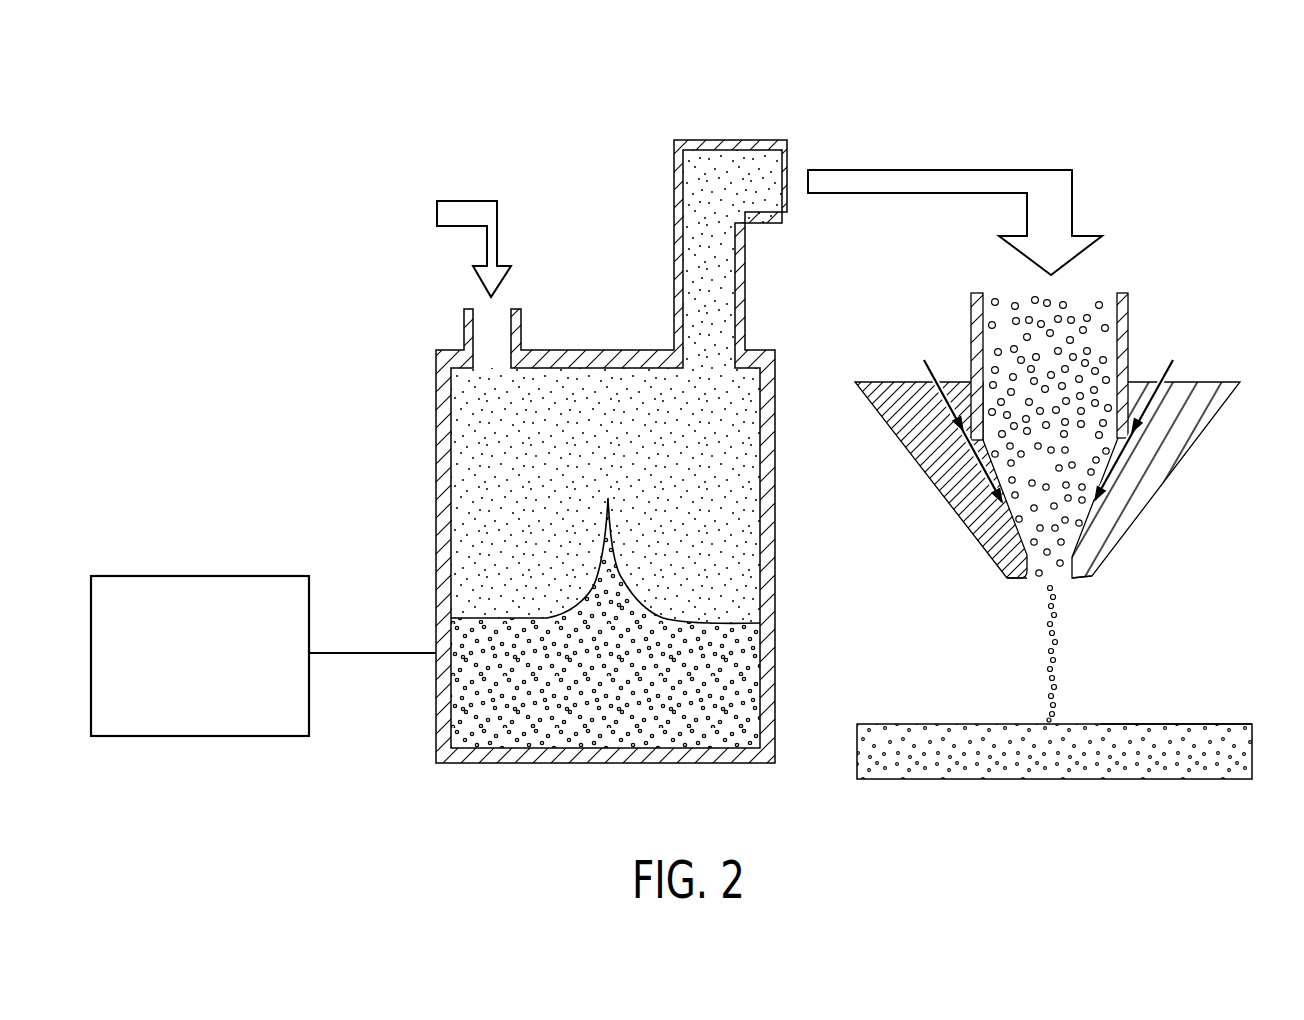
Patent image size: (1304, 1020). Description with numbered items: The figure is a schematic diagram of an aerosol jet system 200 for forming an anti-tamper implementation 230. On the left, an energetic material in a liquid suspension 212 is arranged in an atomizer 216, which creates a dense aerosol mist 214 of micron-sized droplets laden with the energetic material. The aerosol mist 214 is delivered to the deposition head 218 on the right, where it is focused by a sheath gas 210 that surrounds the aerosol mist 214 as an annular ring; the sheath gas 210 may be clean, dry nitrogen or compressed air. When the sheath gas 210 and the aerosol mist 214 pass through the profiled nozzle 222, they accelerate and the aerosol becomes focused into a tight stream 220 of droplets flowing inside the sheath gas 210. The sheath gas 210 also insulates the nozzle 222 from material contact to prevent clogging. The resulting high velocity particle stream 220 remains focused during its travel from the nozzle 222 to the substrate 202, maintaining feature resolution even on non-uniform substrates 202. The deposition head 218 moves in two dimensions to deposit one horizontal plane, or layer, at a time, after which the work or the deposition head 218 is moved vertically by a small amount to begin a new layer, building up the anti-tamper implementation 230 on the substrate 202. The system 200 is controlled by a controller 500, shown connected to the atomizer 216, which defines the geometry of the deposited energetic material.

The aerosol jet system 200 is at (687, 401).
The substrate 202 is at (912, 723).
The sheath gas 210 is at (910, 349).
The liquid suspension 212 is at (718, 667).
The aerosol mist 214 is at (728, 520).
The atomizer 216 is at (440, 492).
The deposition head 218 is at (1147, 498).
The stream of droplets 220 is at (1078, 582).
The profiled nozzle 222 is at (1027, 583).
The anti-tamper implementation 230 is at (1222, 698).
The controller 500 is at (188, 575).